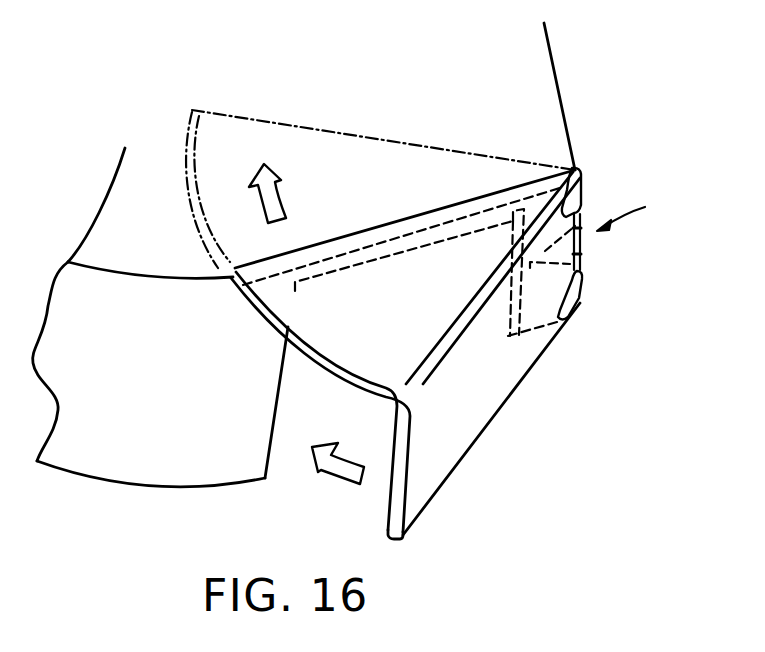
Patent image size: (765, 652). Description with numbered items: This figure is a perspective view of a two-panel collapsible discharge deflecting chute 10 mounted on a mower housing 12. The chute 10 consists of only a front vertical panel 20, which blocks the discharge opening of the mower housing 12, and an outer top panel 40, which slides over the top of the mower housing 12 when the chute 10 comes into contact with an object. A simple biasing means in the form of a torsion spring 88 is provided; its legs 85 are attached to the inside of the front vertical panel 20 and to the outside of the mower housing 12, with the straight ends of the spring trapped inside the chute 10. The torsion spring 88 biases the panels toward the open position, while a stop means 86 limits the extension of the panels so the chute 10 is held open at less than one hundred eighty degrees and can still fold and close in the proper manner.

The collapsible discharge deflecting chute 10 is at (433, 296).
The mower housing 12 is at (563, 117).
The front vertical panel 20 is at (510, 357).
The outer top panel 40 is at (373, 360).
The legs 85 is at (580, 272).
The stop means 86 is at (583, 185).
The torsion spring 88 is at (649, 200).